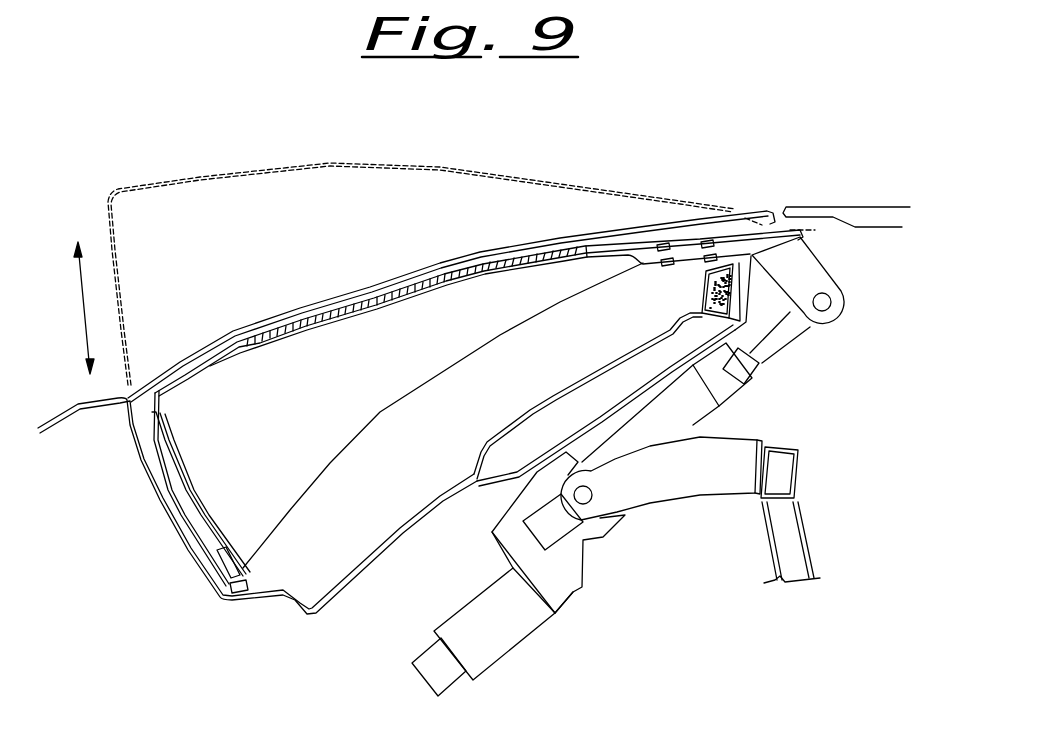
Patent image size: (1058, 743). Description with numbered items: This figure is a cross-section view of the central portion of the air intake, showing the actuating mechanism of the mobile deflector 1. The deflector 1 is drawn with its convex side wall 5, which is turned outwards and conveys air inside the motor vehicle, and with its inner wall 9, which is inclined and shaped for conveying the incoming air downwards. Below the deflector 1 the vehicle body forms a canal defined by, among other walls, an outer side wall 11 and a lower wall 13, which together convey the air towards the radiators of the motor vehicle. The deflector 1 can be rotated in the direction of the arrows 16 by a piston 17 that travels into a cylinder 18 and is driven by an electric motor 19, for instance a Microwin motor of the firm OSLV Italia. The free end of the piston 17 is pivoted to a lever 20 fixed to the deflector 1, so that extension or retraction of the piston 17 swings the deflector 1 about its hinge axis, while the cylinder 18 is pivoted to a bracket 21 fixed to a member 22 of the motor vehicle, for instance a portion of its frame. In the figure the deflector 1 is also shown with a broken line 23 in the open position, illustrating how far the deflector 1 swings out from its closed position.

The deflector 1 is at (373, 282).
The side wall 5 is at (147, 455).
The inner wall 9 is at (377, 405).
The outer side wall 11 is at (163, 512).
The lower wall 13 is at (380, 550).
The arrows 16 is at (82, 305).
The piston 17 is at (797, 328).
The cylinder 18 is at (712, 418).
The electric motor 19 is at (505, 643).
The lever 20 is at (815, 268).
The bracket 21 is at (680, 487).
The member 22 is at (795, 483).
The broken line 23 is at (468, 168).